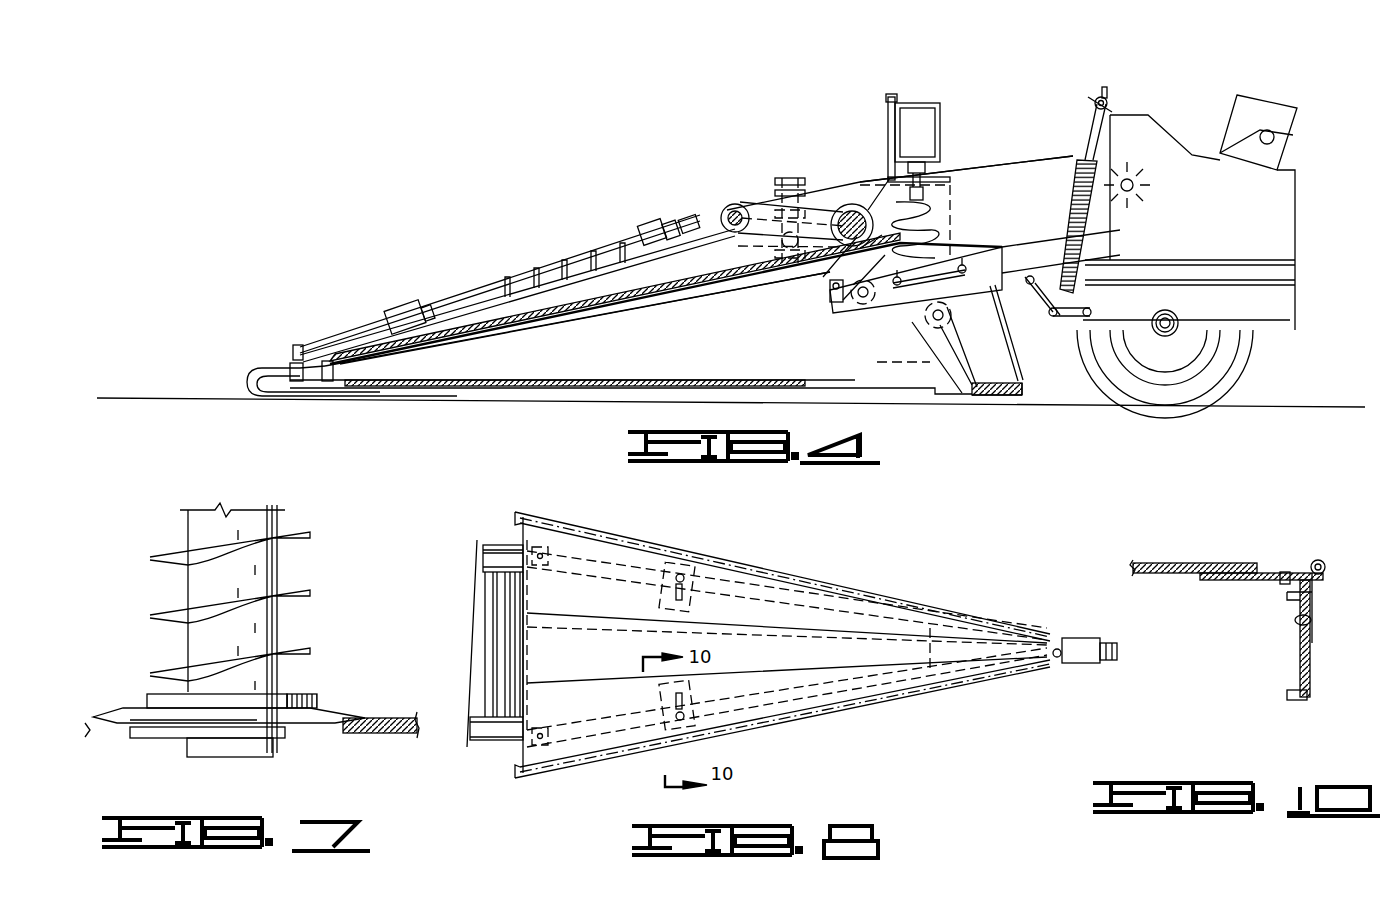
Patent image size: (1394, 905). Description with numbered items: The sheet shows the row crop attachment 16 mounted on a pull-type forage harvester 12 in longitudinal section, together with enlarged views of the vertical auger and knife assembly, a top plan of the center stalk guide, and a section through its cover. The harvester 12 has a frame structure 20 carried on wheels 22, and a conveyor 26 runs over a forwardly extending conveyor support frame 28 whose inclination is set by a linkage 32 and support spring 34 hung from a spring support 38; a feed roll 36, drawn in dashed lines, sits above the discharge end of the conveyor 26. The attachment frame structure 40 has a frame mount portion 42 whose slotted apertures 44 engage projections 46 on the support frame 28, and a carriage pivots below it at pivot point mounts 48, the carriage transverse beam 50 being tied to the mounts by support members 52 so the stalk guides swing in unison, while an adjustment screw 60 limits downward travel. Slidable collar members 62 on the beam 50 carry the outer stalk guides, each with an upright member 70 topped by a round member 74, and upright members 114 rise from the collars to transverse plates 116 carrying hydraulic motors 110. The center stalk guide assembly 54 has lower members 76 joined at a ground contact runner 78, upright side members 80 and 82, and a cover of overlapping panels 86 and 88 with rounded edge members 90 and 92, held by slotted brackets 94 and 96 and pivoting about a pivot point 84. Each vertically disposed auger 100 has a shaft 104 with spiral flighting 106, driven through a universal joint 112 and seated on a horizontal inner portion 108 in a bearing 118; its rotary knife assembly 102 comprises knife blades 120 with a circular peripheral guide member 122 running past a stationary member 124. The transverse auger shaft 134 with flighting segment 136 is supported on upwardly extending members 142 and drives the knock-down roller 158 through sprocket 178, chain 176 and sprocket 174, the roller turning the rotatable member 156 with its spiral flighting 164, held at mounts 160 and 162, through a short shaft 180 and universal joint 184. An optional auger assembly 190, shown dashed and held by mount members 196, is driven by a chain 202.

In FIG. 4, the forage harvester 12 is at (1283, 202).
In FIG. 4, the row crop attachment 16 is at (550, 152).
In FIG. 4, the frame structure 20 is at (1300, 298).
In FIG. 4, the wheels 22 is at (1240, 362).
In FIG. 4, the conveyor 26 is at (964, 246).
In FIG. 8, the conveyor 26 is at (480, 638).
In FIG. 4, the conveyor support frame 28 is at (1038, 264).
In FIG. 8, the conveyor support frame 28 is at (497, 556).
In FIG. 4, the linkage 32 is at (1082, 299).
In FIG. 4, the support spring 34 is at (1080, 240).
In FIG. 4, the feed roll 36 is at (1140, 173).
In FIG. 4, the spring support 38 is at (1110, 101).
In FIG. 4, the frame structure 40 is at (878, 396).
In FIG. 4, the frame mount portion 42 is at (832, 315).
In FIG. 4, the apertures 44 is at (920, 312).
In FIG. 4, the projections 46 is at (958, 274).
In FIG. 4, the pivot point mounts 48 is at (938, 322).
In FIG. 4, the carriage transverse beam 50 is at (1010, 397).
In FIG. 4, the support members 52 is at (990, 372).
In FIG. 4, the center stalk guide assembly 54 is at (465, 393).
In FIG. 8, the center stalk guide assembly 54 is at (937, 703).
In FIG. 4, the adjustment screw 60 is at (830, 305).
In FIG. 4, the collar member 62 is at (1025, 388).
In FIG. 4, the upright member 70 is at (635, 262).
In FIG. 4, the round member 74 is at (348, 343).
In FIG. 4, the lower members 76 is at (595, 392).
In FIG. 8, the lower members 76 is at (830, 630).
In FIG. 4, the ground contact runner 78 is at (245, 378).
In FIG. 8, the ground contact runner 78 is at (1096, 642).
In FIG. 8, the side member 80 is at (600, 550).
In FIG. 4, the side member 82 is at (540, 385).
In FIG. 8, the side member 82 is at (605, 730).
In FIG. 10, the side member 82 is at (1312, 662).
In FIG. 4, the pivot point 84 is at (297, 350).
In FIG. 8, the pivot point 84 is at (1060, 660).
In FIG. 4, the panel 86 is at (538, 328).
In FIG. 8, the panel 86 is at (815, 680).
In FIG. 10, the panel 86 is at (1245, 581).
In FIG. 8, the panel 88 is at (755, 582).
In FIG. 10, the panel 88 is at (1165, 574).
In FIG. 4, the rounded outer edge member 90 is at (582, 303).
In FIG. 8, the rounded outer edge member 90 is at (645, 745).
In FIG. 10, the rounded outer edge member 90 is at (1326, 563).
In FIG. 8, the rounded outer edge member 92 is at (665, 545).
In FIG. 8, the slotted bracket 94 is at (760, 735).
In FIG. 10, the slotted bracket 94 is at (1313, 598).
In FIG. 8, the slotted bracket 96 is at (712, 572).
In FIG. 4, the vertically disposed augers 100 is at (955, 208).
In FIG. 7, the vertically disposed augers 100 is at (150, 522).
In FIG. 7, the rotary knife assembly 102 is at (116, 676).
In FIG. 7, the shaft 104 is at (202, 578).
In FIG. 7, the spiral flighting 106 is at (175, 624).
In FIG. 7, the horizontal inner portion 108 is at (143, 735).
In FIG. 4, the hydraulic motor 110 is at (940, 126).
In FIG. 4, the universal joint 112 is at (960, 178).
In FIG. 4, the upright member 114 is at (1003, 357).
In FIG. 4, the transverse plate 116 is at (896, 97).
In FIG. 7, the bearing 118 is at (218, 752).
In FIG. 7, the knife blades 120 is at (125, 712).
In FIG. 7, the circular peripheral guide member 122 is at (292, 700).
In FIG. 7, the stationary member 124 is at (360, 728).
In FIG. 4, the shaft 134 is at (800, 241).
In FIG. 4, the flighting segment 136 is at (870, 190).
In FIG. 4, the upwardly extending members 142 is at (830, 284).
In FIG. 4, the rotatable member 156 is at (470, 297).
In FIG. 4, the knock-down roller 158 is at (738, 204).
In FIG. 4, the mount 160 is at (400, 306).
In FIG. 4, the mount 162 is at (645, 232).
In FIG. 4, the spiral flighting 164 is at (560, 268).
In FIG. 4, the sprocket 174 is at (722, 215).
In FIG. 4, the chain 176 is at (738, 238).
In FIG. 4, the sprocket 178 is at (853, 204).
In FIG. 4, the short shaft 180 is at (690, 219).
In FIG. 4, the universal joint 184 is at (665, 225).
In FIG. 4, the optional auger assembly 190 is at (783, 170).
In FIG. 4, the mount members 196 is at (795, 180).
In FIG. 4, the chain 202 is at (838, 195).